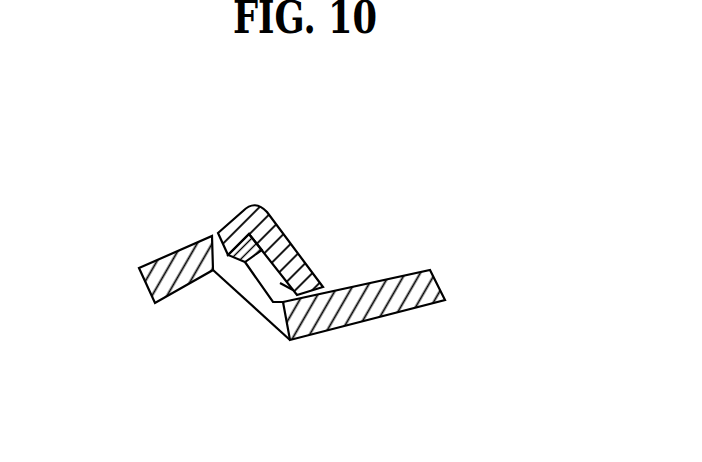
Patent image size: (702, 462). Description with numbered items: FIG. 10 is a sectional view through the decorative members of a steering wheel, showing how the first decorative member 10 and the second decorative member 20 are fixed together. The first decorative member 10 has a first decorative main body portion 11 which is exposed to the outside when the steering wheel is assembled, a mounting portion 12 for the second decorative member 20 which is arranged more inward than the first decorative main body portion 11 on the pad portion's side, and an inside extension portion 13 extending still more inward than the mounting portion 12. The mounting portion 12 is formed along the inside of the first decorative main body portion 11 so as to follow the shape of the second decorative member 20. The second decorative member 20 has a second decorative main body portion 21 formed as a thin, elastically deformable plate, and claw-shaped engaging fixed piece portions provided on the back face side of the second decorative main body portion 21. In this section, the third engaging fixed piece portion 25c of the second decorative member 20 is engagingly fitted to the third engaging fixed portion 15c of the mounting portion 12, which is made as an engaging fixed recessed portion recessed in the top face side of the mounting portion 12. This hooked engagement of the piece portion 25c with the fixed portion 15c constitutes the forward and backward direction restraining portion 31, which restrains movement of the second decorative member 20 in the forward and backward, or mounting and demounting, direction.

The first decorative member 10 is at (306, 274).
The first decorative main body portion 11 is at (158, 262).
The mounting portion 12 is at (218, 268).
The inside extension portion 13 is at (433, 282).
The second decorative member 20 is at (260, 199).
The second decorative main body portion 21 is at (211, 233).
The third engaging fixed piece portion 25c is at (258, 263).
The third engaging fixed portion 15c is at (288, 283).
The forward and backward direction restraining portion 31 is at (363, 226).